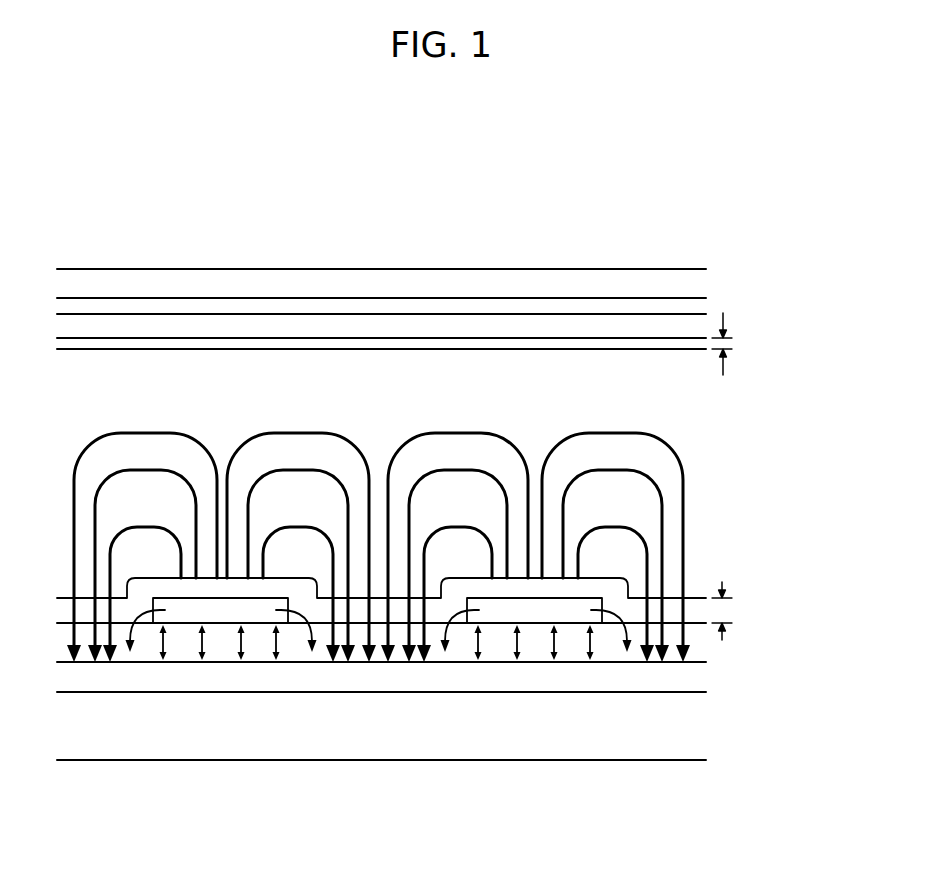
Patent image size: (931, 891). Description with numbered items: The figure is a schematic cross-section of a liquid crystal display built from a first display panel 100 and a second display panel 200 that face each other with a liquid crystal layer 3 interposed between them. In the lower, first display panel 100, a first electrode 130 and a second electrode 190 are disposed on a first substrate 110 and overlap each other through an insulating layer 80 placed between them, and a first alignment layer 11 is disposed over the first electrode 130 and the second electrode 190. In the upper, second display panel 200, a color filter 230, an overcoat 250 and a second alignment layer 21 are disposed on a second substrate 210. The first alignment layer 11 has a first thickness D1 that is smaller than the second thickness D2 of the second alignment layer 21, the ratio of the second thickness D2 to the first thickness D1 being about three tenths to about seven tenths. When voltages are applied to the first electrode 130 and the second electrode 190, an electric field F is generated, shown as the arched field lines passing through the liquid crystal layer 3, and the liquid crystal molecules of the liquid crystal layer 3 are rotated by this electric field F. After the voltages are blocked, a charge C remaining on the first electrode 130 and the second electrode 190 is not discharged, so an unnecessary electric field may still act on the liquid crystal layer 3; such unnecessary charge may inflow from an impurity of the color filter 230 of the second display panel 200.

The second display panel 200 is at (440, 279).
The second substrate 210 is at (358, 287).
The color filter 230 is at (439, 309).
The overcoat 250 is at (520, 328).
The second alignment layer 21 is at (598, 343).
The second thickness D2 is at (734, 344).
The liquid crystal layer 3 is at (434, 507).
The electric field F is at (347, 437).
The first display panel 100 is at (440, 724).
The first substrate 110 is at (625, 742).
The first electrode 130 is at (457, 677).
The insulating layer 80 is at (297, 650).
The first alignment layer 11 is at (503, 589).
The second electrode 190 is at (223, 610).
The charge C is at (164, 646).
The first thickness D1 is at (733, 611).